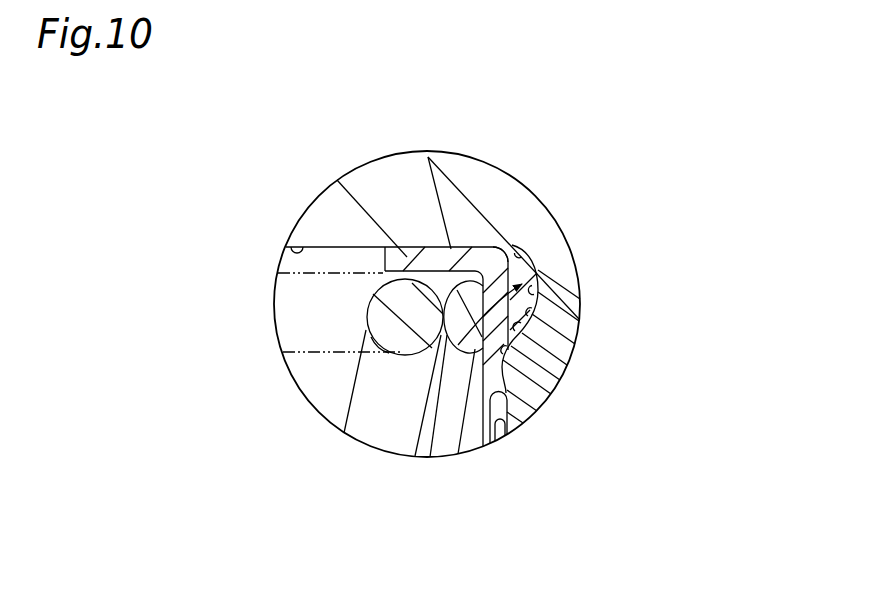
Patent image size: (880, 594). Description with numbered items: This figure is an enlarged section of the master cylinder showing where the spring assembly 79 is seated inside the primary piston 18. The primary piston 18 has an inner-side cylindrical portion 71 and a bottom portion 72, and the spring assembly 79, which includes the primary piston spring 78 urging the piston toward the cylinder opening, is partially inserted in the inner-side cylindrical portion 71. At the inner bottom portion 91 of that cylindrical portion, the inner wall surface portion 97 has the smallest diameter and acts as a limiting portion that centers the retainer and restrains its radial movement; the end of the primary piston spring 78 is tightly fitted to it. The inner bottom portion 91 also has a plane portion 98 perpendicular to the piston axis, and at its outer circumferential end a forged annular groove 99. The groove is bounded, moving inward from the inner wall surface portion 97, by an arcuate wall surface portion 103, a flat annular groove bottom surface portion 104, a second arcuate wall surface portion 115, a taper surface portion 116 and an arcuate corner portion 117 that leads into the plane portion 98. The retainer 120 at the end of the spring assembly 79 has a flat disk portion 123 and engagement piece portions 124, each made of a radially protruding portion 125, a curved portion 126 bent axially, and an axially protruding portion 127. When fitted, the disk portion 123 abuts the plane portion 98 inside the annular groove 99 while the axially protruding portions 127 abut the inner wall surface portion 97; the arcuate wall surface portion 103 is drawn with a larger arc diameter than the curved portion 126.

The primary piston 18 is at (518, 175).
The inner-side cylindrical portion 71 is at (313, 222).
The bottom portion 72 is at (565, 340).
The primary piston spring 78 is at (403, 343).
The spring assembly 79 is at (366, 242).
The inner bottom portion 91 is at (497, 422).
The inner wall surface portion 97 is at (291, 249).
The plane portion 98 is at (500, 447).
The annular groove 99 is at (488, 398).
The arcuate wall surface portion 103 is at (521, 256).
The groove bottom surface portion 104 is at (535, 292).
The arcuate wall surface portion 115 is at (545, 328).
The taper surface portion 116 is at (542, 372).
The arcuate corner portion 117 is at (528, 398).
The retainer 120 is at (382, 262).
The disk portion 123 is at (512, 420).
The engagement piece portion 124 is at (407, 257).
The radially protruding portion 125 is at (531, 316).
The curved portion 126 is at (512, 250).
The axially protruding portion 127 is at (440, 250).